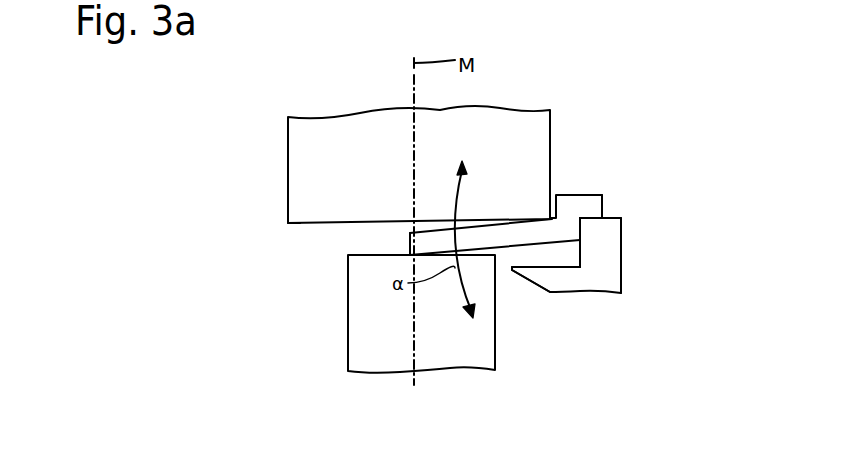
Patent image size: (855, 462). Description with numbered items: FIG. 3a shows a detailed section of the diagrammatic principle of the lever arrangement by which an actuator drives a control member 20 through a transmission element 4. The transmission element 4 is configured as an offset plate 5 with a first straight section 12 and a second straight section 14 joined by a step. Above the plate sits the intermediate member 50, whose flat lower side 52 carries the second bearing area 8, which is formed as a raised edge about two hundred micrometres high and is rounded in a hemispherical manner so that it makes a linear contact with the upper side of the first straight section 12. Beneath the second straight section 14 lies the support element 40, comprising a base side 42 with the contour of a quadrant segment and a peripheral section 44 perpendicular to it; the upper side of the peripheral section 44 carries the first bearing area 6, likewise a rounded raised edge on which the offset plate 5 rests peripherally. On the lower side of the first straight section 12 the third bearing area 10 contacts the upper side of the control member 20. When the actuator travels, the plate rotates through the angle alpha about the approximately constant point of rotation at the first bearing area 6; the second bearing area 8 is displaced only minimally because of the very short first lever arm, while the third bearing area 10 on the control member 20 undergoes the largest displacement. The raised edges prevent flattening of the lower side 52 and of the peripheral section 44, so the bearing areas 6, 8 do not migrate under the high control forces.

The transmission element 4 is at (580, 177).
The offset plate 5 is at (572, 197).
The first bearing area 6 is at (585, 220).
The second bearing area 8 is at (549, 216).
The third bearing area 10 is at (413, 250).
The first straight section 12 is at (477, 234).
The second straight section 14 is at (599, 200).
The control member 20 is at (356, 330).
The support element 40 is at (601, 281).
The base side 42 is at (593, 288).
The peripheral section 44 is at (617, 255).
The intermediate member 50 is at (295, 190).
The lower side 52 is at (315, 225).